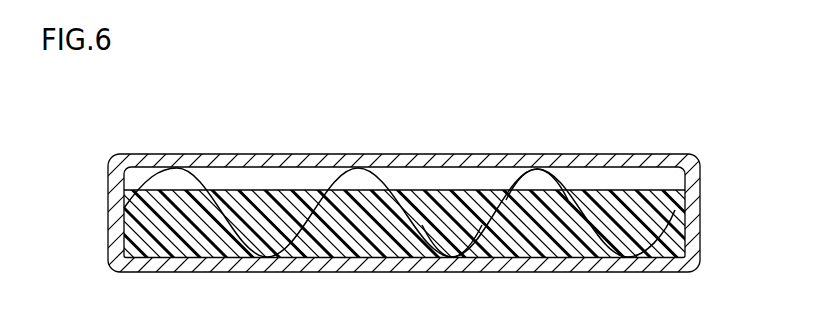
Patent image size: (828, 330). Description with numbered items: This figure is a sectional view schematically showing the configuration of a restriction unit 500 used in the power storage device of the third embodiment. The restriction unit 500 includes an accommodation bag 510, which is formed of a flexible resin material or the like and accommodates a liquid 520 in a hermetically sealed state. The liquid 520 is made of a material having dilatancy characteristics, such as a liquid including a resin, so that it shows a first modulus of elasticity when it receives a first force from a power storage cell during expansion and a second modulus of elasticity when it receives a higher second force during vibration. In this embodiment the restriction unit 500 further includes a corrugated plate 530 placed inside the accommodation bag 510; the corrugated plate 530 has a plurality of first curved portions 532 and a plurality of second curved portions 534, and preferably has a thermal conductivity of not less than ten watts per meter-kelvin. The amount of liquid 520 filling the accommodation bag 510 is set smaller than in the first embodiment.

The restriction unit 500 is at (222, 113).
The accommodation bag 510 is at (238, 162).
The liquid 520 is at (280, 192).
The corrugated plate 530 is at (327, 186).
The first curved portions 532 is at (523, 172).
The second curved portions 534 is at (465, 256).